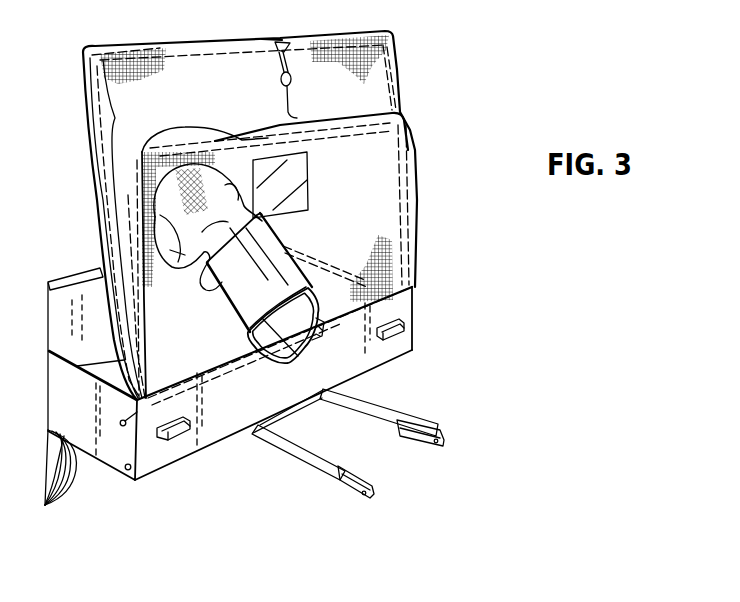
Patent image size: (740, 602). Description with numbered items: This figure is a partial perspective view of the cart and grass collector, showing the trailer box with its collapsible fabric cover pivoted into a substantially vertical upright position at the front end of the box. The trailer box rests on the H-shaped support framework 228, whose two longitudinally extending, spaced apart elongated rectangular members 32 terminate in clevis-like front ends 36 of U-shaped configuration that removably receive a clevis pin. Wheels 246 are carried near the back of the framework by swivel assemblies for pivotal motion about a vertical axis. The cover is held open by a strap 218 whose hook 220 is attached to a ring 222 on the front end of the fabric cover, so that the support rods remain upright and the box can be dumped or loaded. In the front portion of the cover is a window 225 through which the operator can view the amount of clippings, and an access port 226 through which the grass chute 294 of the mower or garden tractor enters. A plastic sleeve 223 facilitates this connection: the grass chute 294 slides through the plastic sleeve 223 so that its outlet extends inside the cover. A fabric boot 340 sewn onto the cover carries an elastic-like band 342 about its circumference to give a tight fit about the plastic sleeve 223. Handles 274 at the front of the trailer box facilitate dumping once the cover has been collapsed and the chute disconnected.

The strap 218 is at (281, 42).
The hook 220 is at (288, 74).
The ring 222 is at (290, 83).
The fabric boot 340 is at (215, 172).
The elastic-like band 342 is at (205, 270).
The window 225 is at (297, 182).
The access port 226 is at (298, 234).
The plastic sleeve 223 is at (234, 309).
The grass chute 294 is at (276, 358).
The handles 274 is at (180, 435).
The H-shaped support framework 228 is at (398, 408).
The longitudinally extending elongated rectangular members 32 is at (322, 425).
The clevis-like front ends 36 is at (373, 486).
The wheels 246 is at (68, 488).